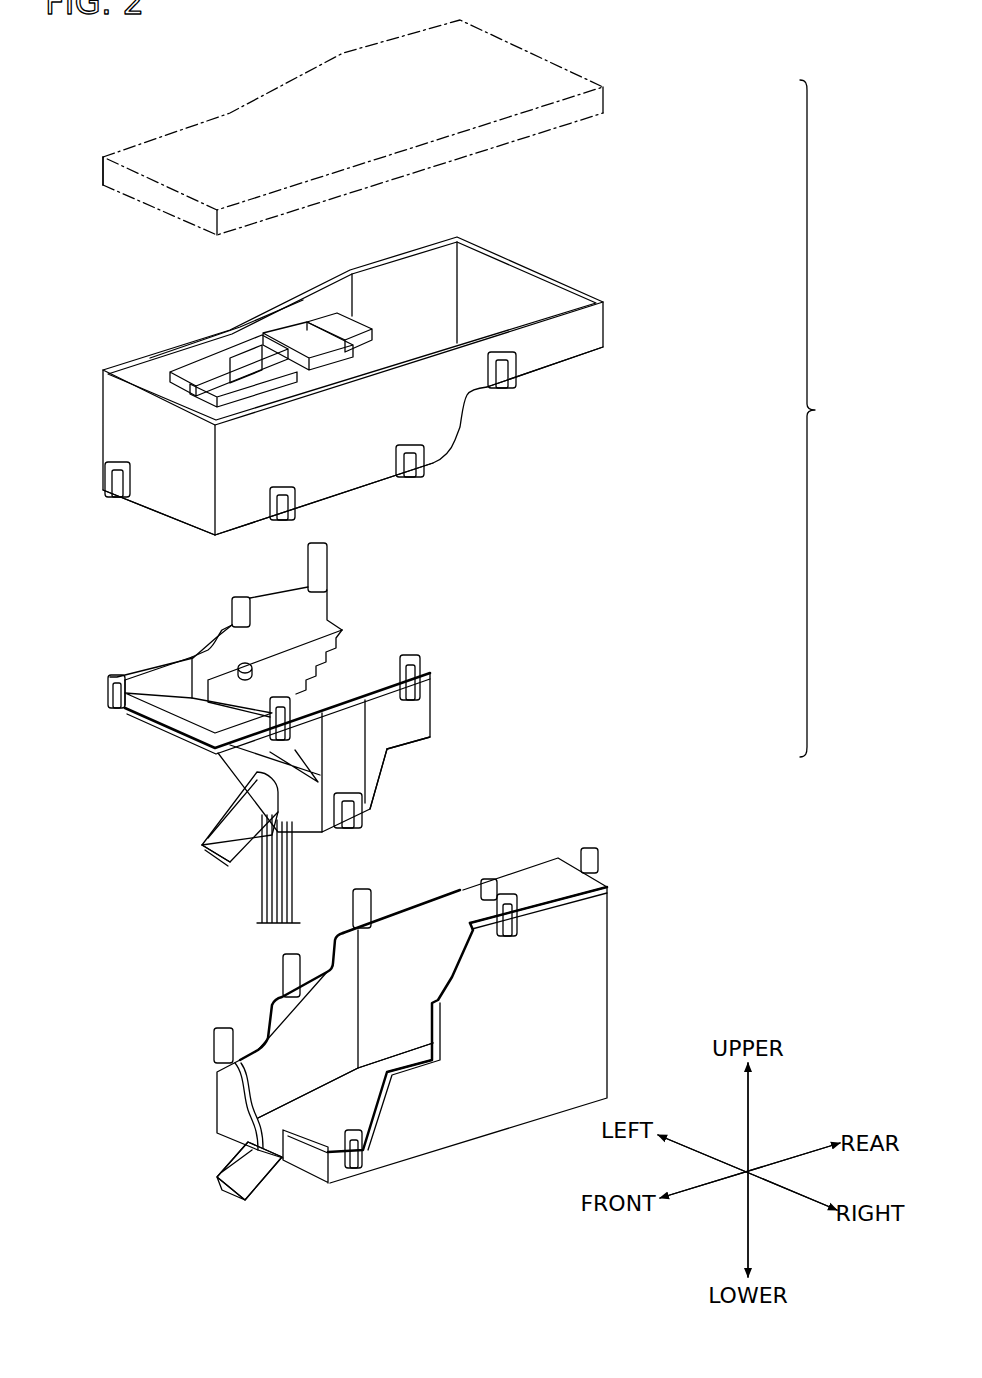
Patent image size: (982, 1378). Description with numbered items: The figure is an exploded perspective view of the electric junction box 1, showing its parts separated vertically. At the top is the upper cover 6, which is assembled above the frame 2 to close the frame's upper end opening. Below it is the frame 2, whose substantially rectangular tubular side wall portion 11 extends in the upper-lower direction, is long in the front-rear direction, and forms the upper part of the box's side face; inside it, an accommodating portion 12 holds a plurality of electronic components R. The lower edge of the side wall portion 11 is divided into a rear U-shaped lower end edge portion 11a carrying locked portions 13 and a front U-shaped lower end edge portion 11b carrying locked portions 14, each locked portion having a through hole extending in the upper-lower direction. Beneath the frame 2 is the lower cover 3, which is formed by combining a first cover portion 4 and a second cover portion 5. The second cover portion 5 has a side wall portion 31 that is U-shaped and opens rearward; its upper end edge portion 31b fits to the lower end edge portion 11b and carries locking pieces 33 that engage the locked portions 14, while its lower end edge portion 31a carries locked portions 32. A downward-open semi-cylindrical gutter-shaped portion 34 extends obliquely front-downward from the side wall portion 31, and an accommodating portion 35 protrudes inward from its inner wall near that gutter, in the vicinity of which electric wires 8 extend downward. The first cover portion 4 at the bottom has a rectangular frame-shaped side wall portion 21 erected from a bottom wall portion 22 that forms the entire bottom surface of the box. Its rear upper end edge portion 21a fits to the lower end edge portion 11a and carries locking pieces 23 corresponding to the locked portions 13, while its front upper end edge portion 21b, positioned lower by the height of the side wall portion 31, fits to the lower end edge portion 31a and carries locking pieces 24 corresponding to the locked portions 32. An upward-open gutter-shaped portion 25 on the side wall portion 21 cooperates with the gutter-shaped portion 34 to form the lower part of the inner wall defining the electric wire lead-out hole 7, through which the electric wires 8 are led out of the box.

The electric junction box 1 is at (470, 418).
The frame 2 is at (406, 399).
The lower cover 3 is at (418, 896).
The first cover portion 4 is at (448, 1027).
The second cover portion 5 is at (399, 888).
The upper cover 6 is at (627, 90).
The electric wire lead-out hole 7 is at (217, 803).
The electric wires 8 is at (260, 885).
The side wall portion 11 is at (122, 427).
The lower end edge portion 11a is at (558, 367).
The lower end edge portion 11b is at (175, 520).
The accommodating portion 12 is at (258, 355).
The locked portions 13 is at (503, 377).
The locked portions 14 is at (410, 465).
The side wall portion 21 is at (592, 1020).
The upper end edge portion 21a is at (415, 905).
The upper end edge portion 21b is at (265, 1020).
The bottom wall portion 22 is at (320, 1115).
The locking pieces 23 is at (363, 890).
The locking pieces 24 is at (293, 953).
The gutter-shaped portion 25 is at (227, 1162).
The side wall portion 31 is at (305, 709).
The lower end edge portion 31a is at (400, 750).
The upper end edge portion 31b is at (155, 665).
The locked portions 32 is at (350, 822).
The locking pieces 33 is at (243, 595).
The gutter-shaped portion 34 is at (203, 828).
The accommodating portion 35 is at (277, 663).
The electronic components R is at (293, 333).